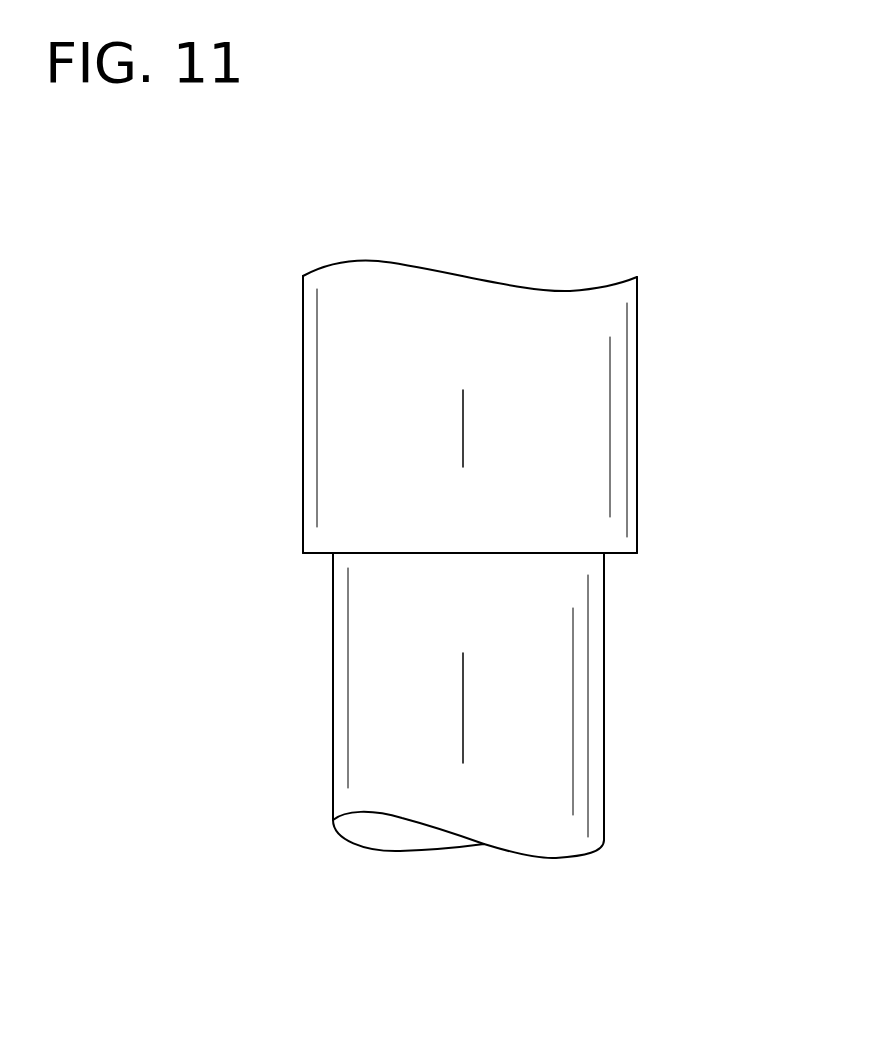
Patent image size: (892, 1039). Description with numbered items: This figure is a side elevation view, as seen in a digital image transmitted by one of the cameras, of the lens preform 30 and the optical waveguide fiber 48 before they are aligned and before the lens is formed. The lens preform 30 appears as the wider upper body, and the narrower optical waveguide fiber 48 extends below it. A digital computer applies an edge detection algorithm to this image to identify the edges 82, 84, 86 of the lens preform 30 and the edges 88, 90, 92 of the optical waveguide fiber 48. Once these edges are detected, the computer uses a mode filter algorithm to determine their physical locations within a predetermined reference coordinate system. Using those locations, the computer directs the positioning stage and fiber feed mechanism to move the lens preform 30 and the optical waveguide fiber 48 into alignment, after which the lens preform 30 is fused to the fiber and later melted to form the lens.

The lens preform 30 is at (455, 402).
The edge of the lens preform 82 is at (302, 383).
The edge of the lens preform 86 is at (637, 398).
The edge of the lens preform 84 is at (620, 553).
The edge of the optical waveguide fiber 90 is at (382, 553).
The edge of the optical waveguide fiber 88 is at (333, 727).
The edge of the optical waveguide fiber 92 is at (604, 708).
The optical waveguide fiber 48 is at (470, 757).